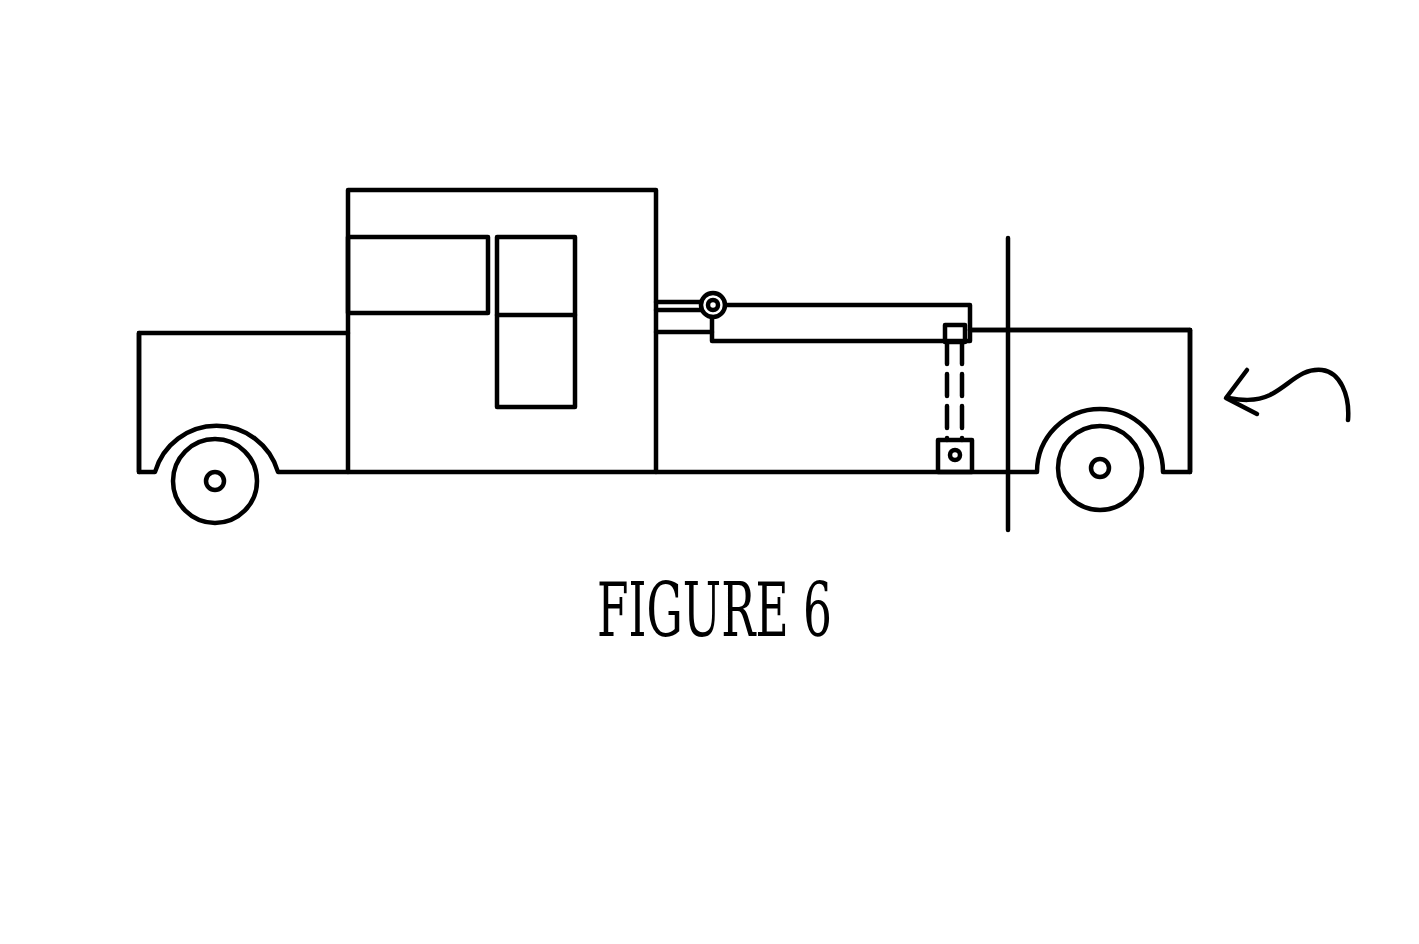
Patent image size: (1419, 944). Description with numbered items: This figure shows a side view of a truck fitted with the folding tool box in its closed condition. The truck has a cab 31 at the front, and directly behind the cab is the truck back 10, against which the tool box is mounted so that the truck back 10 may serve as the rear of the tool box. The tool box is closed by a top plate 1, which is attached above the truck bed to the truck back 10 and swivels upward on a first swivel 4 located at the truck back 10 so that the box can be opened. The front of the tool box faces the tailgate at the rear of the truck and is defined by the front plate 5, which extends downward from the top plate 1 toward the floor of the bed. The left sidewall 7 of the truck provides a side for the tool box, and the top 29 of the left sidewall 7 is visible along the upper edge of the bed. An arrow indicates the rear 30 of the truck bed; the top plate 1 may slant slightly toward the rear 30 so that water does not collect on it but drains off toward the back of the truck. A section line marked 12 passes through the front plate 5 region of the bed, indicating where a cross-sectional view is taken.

The truck back 10 is at (657, 208).
The cab 31 is at (278, 294).
The first swivel 4 is at (713, 293).
The top plate 1 is at (763, 305).
The front plate 5 is at (946, 390).
The section line 12- 12 is at (940, 389).
The top of the truck left sidewall 29 is at (1040, 330).
The left sidewall 7 is at (1148, 340).
The rear of the truck bed 30 is at (1315, 434).